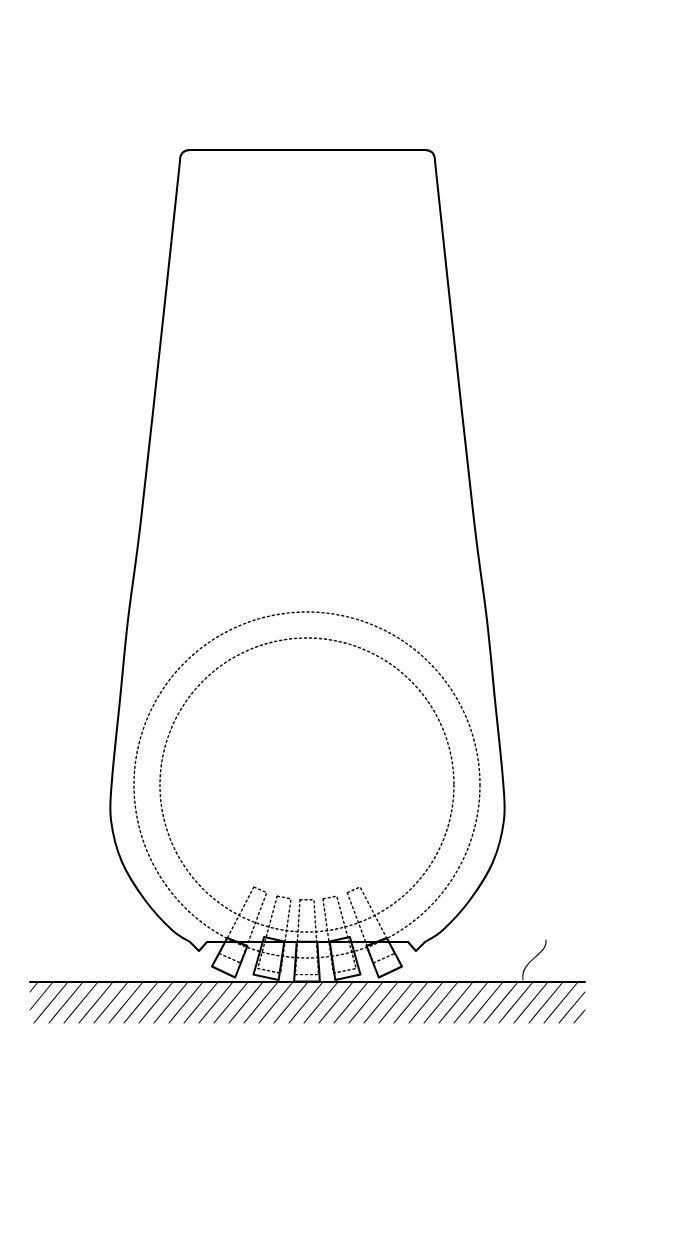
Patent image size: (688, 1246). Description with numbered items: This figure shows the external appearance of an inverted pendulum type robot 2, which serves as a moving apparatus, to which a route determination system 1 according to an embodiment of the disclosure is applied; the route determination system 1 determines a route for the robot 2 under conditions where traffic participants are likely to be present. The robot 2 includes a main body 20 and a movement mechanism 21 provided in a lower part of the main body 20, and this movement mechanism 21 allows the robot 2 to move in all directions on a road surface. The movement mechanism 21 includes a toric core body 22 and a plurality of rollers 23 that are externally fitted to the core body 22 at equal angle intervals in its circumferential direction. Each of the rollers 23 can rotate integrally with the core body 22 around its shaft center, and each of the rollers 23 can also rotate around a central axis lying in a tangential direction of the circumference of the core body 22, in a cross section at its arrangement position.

The route determination system 1 is at (558, 92).
The inverted pendulum type robot 2 is at (312, 136).
The main body 20 is at (452, 277).
The movement mechanism 21 is at (150, 942).
The core body 22 is at (307, 612).
The rollers 23 is at (224, 970).